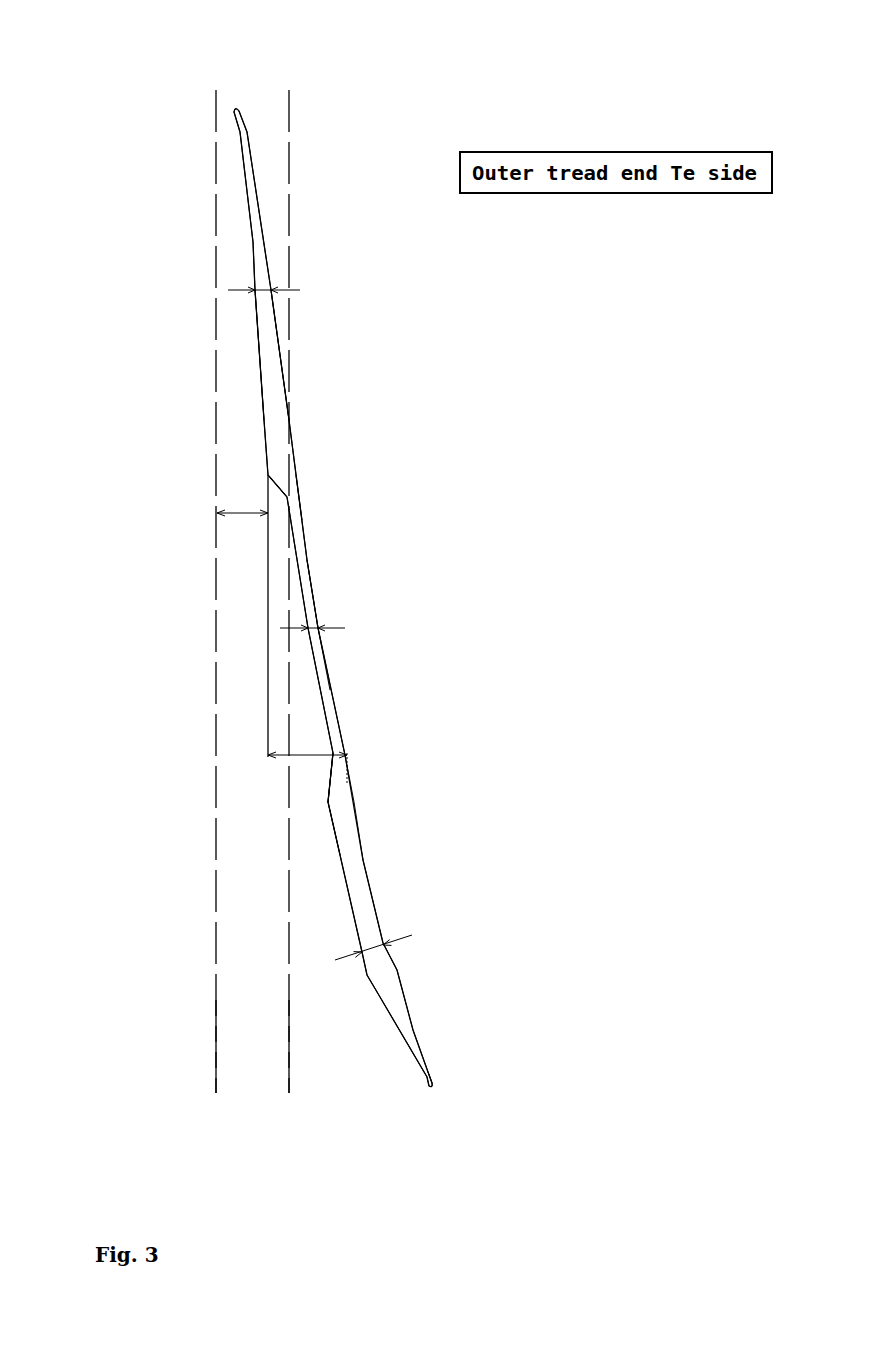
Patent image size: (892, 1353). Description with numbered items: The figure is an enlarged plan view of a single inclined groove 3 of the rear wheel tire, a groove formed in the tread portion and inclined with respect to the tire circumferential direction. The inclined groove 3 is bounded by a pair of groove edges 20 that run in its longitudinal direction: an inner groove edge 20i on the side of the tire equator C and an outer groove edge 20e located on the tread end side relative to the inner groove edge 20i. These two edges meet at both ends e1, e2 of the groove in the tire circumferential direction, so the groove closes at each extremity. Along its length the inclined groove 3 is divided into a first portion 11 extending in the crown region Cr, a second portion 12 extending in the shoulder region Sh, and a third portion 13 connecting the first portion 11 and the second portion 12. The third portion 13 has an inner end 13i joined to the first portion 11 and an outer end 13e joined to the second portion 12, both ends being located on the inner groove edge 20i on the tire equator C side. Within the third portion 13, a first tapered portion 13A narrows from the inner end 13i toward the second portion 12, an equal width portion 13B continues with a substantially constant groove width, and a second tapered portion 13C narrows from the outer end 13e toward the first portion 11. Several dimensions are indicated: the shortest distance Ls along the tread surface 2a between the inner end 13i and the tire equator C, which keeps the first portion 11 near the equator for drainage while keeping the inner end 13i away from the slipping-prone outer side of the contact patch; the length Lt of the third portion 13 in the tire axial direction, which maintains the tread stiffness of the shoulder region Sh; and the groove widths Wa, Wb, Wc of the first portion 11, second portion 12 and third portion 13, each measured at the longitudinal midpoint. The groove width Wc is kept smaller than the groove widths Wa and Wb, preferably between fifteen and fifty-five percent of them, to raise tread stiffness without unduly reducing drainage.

The groove edges 20 is at (247, 132).
The first portion 11 is at (260, 242).
The second portion 12 is at (420, 978).
The third portion 13 is at (412, 530).
The first tapered portion 13A is at (302, 480).
The equal width portion 13B is at (323, 617).
The second tapered portion 13C is at (363, 777).
The inner end 13i is at (268, 476).
The outer end 13e is at (328, 803).
The outer groove edge 20e is at (278, 325).
The inner groove edge 20i is at (258, 376).
The end of inclined groove e1 is at (237, 108).
The end of inclined groove e2 is at (432, 1086).
The inclined groove 3 is at (178, 632).
The tread surface 2a is at (149, 1016).
The tire equator C is at (216, 114).
The crown region Cr is at (252, 1093).
The shoulder region Sh is at (339, 1093).
The groove width of first portion Wa is at (262, 290).
The groove width of second portion Wb is at (372, 947).
The groove width of third portion Wc is at (310, 632).
The shortest distance Ls is at (240, 515).
The length of third portion Lt is at (312, 757).